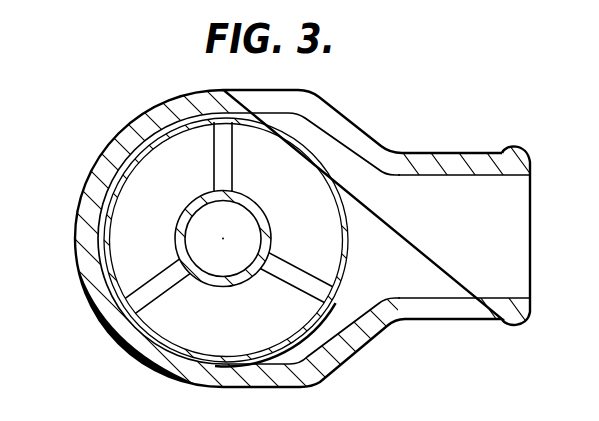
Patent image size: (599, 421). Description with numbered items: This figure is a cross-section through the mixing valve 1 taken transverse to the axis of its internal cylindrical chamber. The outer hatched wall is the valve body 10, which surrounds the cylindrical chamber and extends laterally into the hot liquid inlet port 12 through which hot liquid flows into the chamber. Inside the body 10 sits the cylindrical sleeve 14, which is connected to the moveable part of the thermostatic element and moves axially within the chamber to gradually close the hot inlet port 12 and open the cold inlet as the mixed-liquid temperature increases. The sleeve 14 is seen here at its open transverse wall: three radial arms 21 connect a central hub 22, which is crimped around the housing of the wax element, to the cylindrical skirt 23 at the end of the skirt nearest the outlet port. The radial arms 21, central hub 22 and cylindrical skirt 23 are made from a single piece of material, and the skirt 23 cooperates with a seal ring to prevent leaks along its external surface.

The mixing valve 1 is at (121, 132).
The body 10 is at (97, 188).
The inlet port 12 is at (371, 183).
The cylindrical sleeve 14 is at (338, 163).
The radial arms 21 is at (221, 164).
The central hub 22 is at (239, 287).
The cylindrical skirt 23 is at (349, 258).